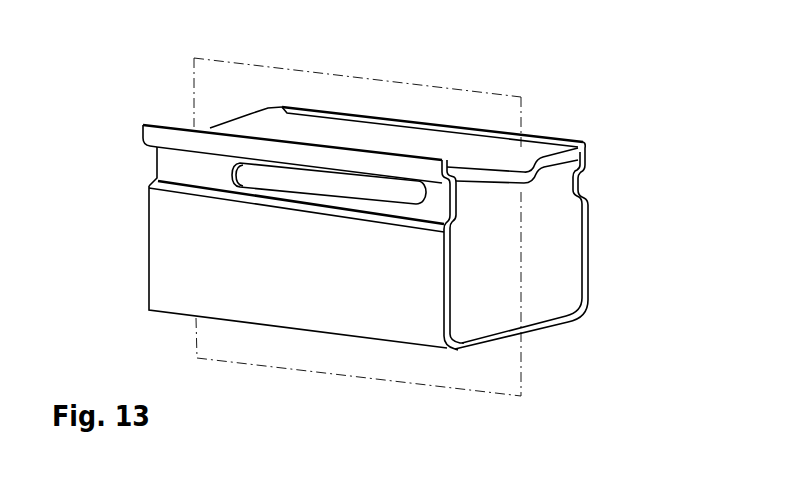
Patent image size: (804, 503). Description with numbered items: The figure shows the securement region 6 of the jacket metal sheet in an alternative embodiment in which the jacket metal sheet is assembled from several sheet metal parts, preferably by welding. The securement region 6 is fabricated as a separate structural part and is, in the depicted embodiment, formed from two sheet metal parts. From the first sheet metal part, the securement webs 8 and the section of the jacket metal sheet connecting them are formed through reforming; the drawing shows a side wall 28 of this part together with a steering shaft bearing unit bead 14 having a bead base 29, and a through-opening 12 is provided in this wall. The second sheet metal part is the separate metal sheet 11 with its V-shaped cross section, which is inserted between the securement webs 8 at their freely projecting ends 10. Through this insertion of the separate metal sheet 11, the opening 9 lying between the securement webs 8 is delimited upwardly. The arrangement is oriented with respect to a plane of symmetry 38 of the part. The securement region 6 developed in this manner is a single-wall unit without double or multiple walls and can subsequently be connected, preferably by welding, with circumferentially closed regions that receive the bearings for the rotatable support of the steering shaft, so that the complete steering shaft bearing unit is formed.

The securement region 6 is at (365, 316).
The securement web 8 is at (573, 188).
The opening 9 is at (549, 220).
The freely projecting end 10 is at (166, 124).
The separate metal sheet 11 is at (535, 152).
The through-opening 12 is at (365, 185).
The steering shaft bearing unit bead 14 is at (178, 158).
The side wall 28 is at (207, 193).
The bead base 29 is at (438, 203).
The plane of symmetry 38 is at (490, 291).